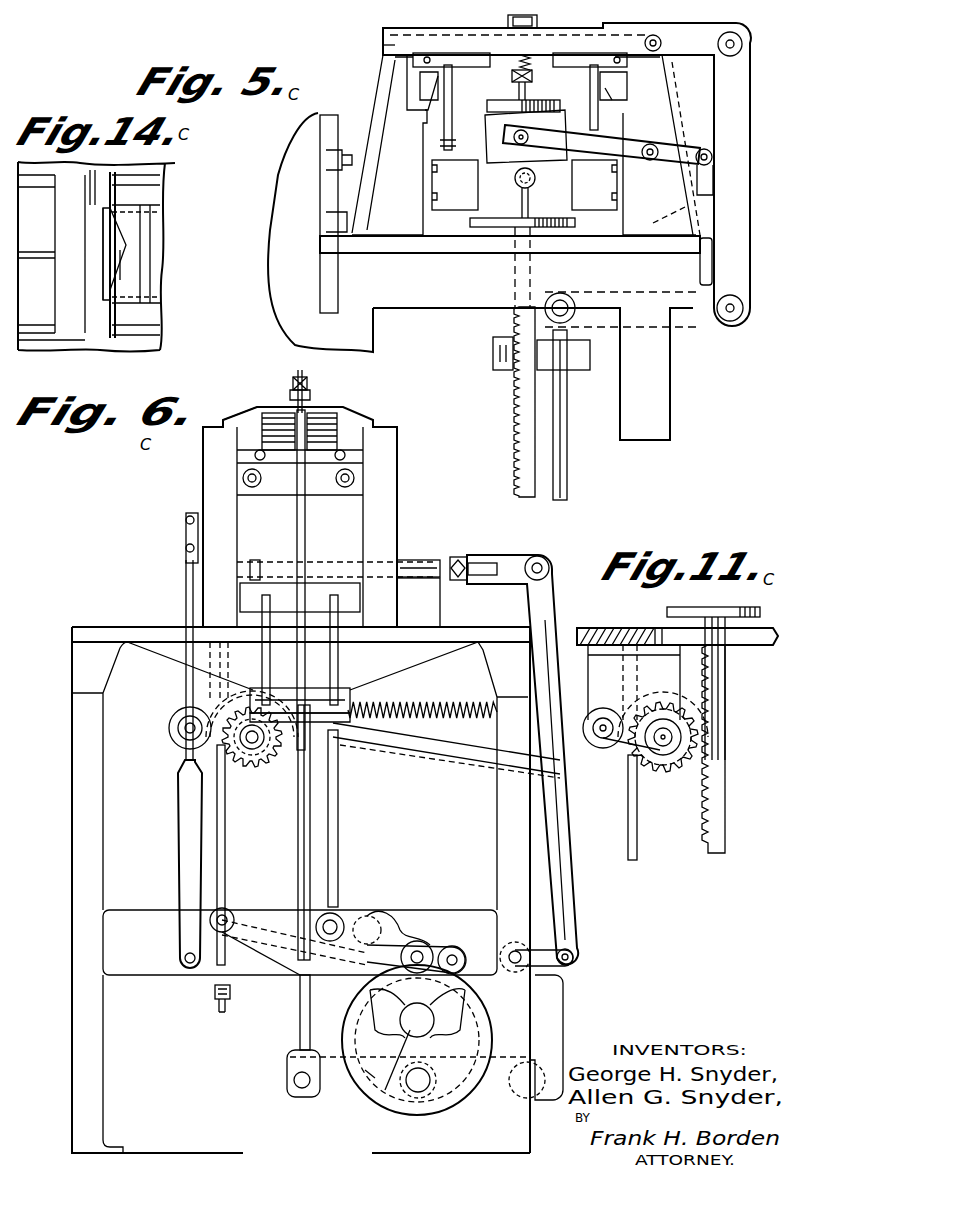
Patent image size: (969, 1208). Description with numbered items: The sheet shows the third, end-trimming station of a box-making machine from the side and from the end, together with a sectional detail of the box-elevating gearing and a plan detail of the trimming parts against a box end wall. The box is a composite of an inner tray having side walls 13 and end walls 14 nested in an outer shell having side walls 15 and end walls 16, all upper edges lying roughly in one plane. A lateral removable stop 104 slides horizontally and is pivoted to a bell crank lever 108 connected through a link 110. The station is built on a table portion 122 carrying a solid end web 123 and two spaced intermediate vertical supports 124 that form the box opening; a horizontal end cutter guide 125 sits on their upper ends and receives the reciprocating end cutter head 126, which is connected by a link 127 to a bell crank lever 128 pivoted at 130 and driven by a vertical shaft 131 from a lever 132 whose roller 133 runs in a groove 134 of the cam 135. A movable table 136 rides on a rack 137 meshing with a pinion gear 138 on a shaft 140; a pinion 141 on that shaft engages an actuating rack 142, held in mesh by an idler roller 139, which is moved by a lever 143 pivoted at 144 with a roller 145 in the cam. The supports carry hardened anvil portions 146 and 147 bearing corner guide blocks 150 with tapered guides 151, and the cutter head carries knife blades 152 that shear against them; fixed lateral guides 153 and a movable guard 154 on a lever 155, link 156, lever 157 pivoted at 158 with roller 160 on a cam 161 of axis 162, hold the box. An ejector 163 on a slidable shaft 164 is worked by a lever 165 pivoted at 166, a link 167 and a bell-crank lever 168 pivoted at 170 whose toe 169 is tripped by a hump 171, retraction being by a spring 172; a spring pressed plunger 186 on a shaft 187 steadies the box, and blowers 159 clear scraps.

In FIG. 14, the side walls 13 is at (150, 235).
In FIG. 14, the end walls 14 is at (120, 260).
In FIG. 14, the side walls 15 is at (160, 208).
In FIG. 14, the end walls 16 is at (103, 220).
In FIG. 5, the gauge or lateral removable stop 104 is at (320, 157).
In FIG. 5, the bell crank lever 108 is at (325, 200).
In FIG. 5, the link 110 is at (330, 262).
In FIG. 5, the table portion 122 is at (455, 253).
In FIG. 11, the table portion 122 is at (620, 615).
In FIG. 5, the end web 123 is at (661, 145).
In FIG. 6, the end web 123 is at (385, 480).
In FIG. 5, the intermediate vertical supports 124 is at (640, 30).
In FIG. 5, the horizontal end cutter guide 125 is at (383, 30).
In FIG. 6, the horizontal end cutter guide 125 is at (345, 410).
In FIG. 5, the end cutter head 126 is at (527, 60).
In FIG. 6, the end cutter head 126 is at (262, 430).
In FIG. 5, the link 127 is at (693, 44).
In FIG. 6, the link 127 is at (290, 400).
In FIG. 5, the bell crank lever 128 is at (740, 115).
In FIG. 6, the bell crank lever 128 is at (335, 538).
In FIG. 5, the pivot 130 is at (740, 320).
In FIG. 6, the pivot 130 is at (352, 703).
In FIG. 6, the vertical shaft 131 is at (298, 845).
In FIG. 6, the lever 132 is at (315, 1100).
In FIG. 6, the roller 133 is at (430, 1090).
In FIG. 6, the groove 134 is at (372, 1080).
In FIG. 6, the cam 135 is at (300, 1015).
In FIG. 5, the movable support or table 136 is at (505, 232).
In FIG. 11, the movable support or table 136 is at (715, 607).
In FIG. 5, the rack 137 is at (514, 435).
In FIG. 11, the rack 137 is at (725, 810).
In FIG. 5, the pinion gear 138 is at (512, 380).
In FIG. 6, the pinion gear 138 is at (258, 770).
In FIG. 11, the pinion gear 138 is at (668, 775).
In FIG. 5, the idler roller 139 is at (566, 370).
In FIG. 11, the idler roller 139 is at (595, 748).
In FIG. 6, the shaft 140 is at (262, 745).
In FIG. 11, the shaft 140 is at (672, 735).
In FIG. 6, the pinion 141 is at (245, 775).
In FIG. 11, the pinion 141 is at (690, 740).
In FIG. 5, the actuating rack 142 is at (566, 455).
In FIG. 6, the actuating rack 142 is at (240, 838).
In FIG. 11, the actuating rack 142 is at (628, 775).
In FIG. 6, the lever 143 is at (228, 912).
In FIG. 6, the pivot 144 is at (555, 975).
In FIG. 6, the roller 145 is at (418, 940).
In FIG. 5, the transverse anvil portion 146 is at (428, 90).
In FIG. 14, the transverse anvil portion 146 is at (70, 262).
In FIG. 5, the transverse anvil portion 147 is at (620, 90).
In FIG. 5, the lateral corner guide blocks 150 is at (430, 78).
In FIG. 14, the lateral corner guide blocks 150 is at (112, 172).
In FIG. 5, the depending converging tapered guides 151 is at (452, 108).
In FIG. 14, the depending converging tapered guides 151 is at (118, 180).
In FIG. 5, the transverse knife blades 152 is at (463, 58).
In FIG. 14, the transverse knife blades 152 is at (128, 250).
In FIG. 5, the fixed lateral guides 153 is at (445, 182).
In FIG. 14, the fixed lateral guides 153 is at (160, 205).
In FIG. 5, the movable stop or guide 154 is at (487, 138).
In FIG. 5, the lever 155 is at (607, 145).
In FIG. 6, the lever 155 is at (186, 522).
In FIG. 5, the link 156 is at (715, 182).
In FIG. 6, the link 156 is at (178, 820).
In FIG. 6, the lever 157 is at (207, 975).
In FIG. 6, the pivot 158 is at (300, 975).
In FIG. 5, the air jets or blowers 159 is at (413, 58).
In FIG. 14, the air jets or blowers 159 is at (90, 190).
In FIG. 6, the roller 160 is at (452, 945).
In FIG. 6, the cam 161 is at (417, 1012).
In FIG. 6, the axis 162 is at (410, 1030).
In FIG. 5, the ejector 163 is at (515, 175).
In FIG. 6, the ejector 163 is at (255, 560).
In FIG. 5, the horizontally slidable shaft 164 is at (516, 182).
In FIG. 6, the horizontally slidable shaft 164 is at (452, 557).
In FIG. 5, the lever 165 is at (518, 200).
In FIG. 6, the lever 165 is at (535, 603).
In FIG. 6, the pivot 166 is at (575, 960).
In FIG. 6, the link 167 is at (446, 750).
In FIG. 6, the bell-crank lever 168 is at (333, 848).
In FIG. 6, the toe 169 is at (385, 905).
In FIG. 6, the pivot 170 is at (335, 913).
In FIG. 6, the hump 171 is at (375, 918).
In FIG. 6, the spring 172 is at (445, 706).
In FIG. 5, the spring pressed plunger 186 is at (512, 102).
In FIG. 5, the shaft 187 is at (532, 78).